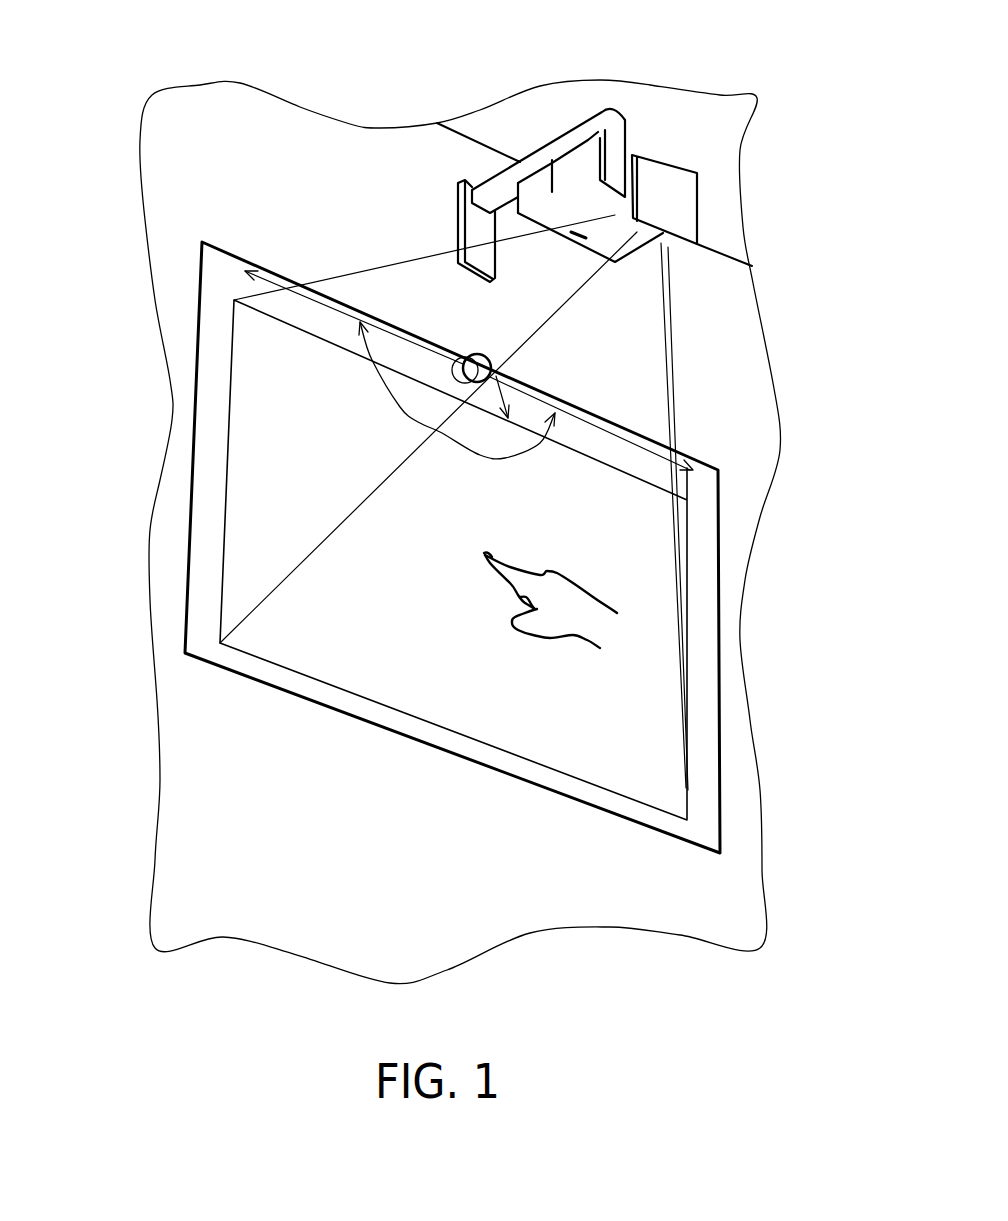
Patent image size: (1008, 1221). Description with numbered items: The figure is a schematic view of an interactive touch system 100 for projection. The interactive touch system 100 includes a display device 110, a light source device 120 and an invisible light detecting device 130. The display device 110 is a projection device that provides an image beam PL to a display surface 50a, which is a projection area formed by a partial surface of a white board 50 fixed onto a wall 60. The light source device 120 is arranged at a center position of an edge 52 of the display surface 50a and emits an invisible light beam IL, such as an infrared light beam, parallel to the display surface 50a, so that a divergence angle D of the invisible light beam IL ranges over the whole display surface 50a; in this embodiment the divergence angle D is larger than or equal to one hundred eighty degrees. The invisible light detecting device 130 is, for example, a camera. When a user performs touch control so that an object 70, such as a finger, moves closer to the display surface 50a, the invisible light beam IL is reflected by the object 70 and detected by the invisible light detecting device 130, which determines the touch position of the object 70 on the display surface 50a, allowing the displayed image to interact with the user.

The interactive touch system 100 is at (287, 157).
The display device 110 is at (683, 203).
The light source device 120 is at (478, 383).
The invisible light detecting device 130 is at (617, 162).
The white board 50 is at (707, 655).
The display surface 50a is at (603, 713).
The edge 52 is at (512, 408).
The wall 60 is at (740, 812).
The object 70 is at (482, 555).
The image beam PL is at (425, 257).
The invisible light beam IL is at (643, 443).
The divergence angle D is at (420, 425).